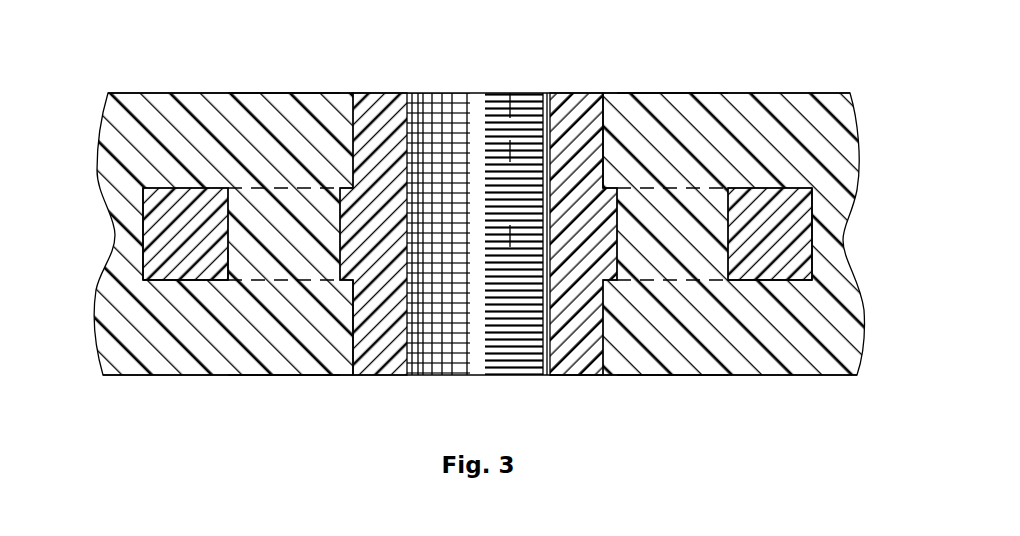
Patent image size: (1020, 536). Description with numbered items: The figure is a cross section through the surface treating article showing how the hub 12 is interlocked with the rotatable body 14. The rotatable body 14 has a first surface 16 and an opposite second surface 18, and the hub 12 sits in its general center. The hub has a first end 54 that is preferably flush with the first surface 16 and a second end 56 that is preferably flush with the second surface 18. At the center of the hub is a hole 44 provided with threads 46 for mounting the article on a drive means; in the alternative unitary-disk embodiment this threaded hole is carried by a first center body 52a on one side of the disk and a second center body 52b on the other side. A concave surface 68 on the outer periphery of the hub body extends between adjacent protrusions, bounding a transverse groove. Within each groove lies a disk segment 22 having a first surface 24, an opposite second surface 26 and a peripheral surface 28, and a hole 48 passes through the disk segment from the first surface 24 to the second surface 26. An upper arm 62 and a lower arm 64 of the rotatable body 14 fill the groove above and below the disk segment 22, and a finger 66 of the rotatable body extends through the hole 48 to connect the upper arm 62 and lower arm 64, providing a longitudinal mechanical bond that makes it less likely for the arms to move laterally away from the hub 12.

The hub 12 is at (375, 90).
The rotatable body 14 is at (819, 92).
The first surface 16 is at (125, 93).
The second surface 18 is at (115, 376).
The disk segment 22 is at (150, 262).
The first surface 24 is at (181, 188).
The second surface 26 is at (190, 281).
The peripheral surface 28 is at (143, 222).
The hole 44 is at (475, 105).
The threads 46 is at (511, 108).
The hole 48 is at (229, 266).
The first center body 52a is at (350, 108).
The second center body 52b is at (353, 320).
The first end 54 is at (574, 93).
The second end 56 is at (583, 377).
The upper arm 62 is at (278, 103).
The lower arm 64 is at (339, 370).
The finger 66 is at (298, 262).
The concave surface 68 is at (605, 138).